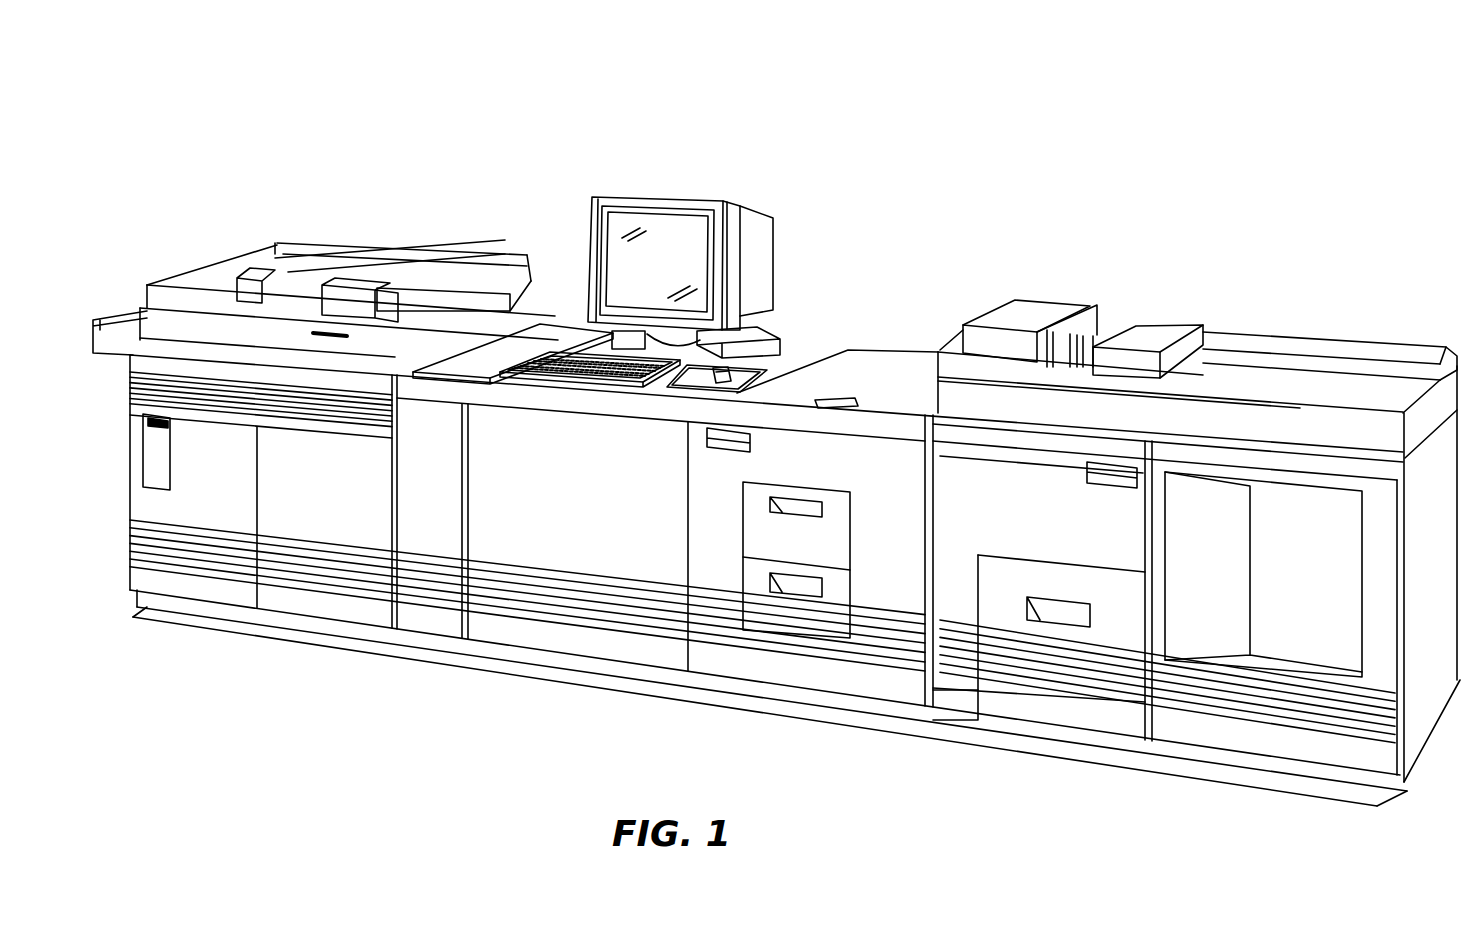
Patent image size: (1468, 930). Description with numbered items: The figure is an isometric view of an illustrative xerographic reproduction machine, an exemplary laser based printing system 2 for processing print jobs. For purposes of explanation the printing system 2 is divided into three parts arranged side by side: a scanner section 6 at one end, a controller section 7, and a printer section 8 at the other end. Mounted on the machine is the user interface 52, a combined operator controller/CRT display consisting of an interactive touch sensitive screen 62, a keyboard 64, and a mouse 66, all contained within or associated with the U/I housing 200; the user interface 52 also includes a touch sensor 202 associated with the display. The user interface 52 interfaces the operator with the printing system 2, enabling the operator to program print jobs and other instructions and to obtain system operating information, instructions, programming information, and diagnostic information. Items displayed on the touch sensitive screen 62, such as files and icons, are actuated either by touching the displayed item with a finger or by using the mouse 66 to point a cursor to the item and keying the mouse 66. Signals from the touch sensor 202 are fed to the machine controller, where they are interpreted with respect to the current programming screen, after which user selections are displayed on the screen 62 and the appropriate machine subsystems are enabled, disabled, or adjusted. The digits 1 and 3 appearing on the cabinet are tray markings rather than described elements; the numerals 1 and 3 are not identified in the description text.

The printing system 2 is at (922, 78).
The scanner section 6 is at (379, 210).
The controller section 7 is at (113, 497).
The printer section 8 is at (895, 263).
The user interface 52 is at (686, 177).
The touch sensitive screen 62 is at (622, 268).
The keyboard 64 is at (577, 388).
The mouse 66 is at (682, 397).
The U/I housing 200 is at (757, 220).
The touch sensor 202 is at (598, 220).
The paper tray 1 is at (796, 560).
The paper tray 3 is at (1039, 628).